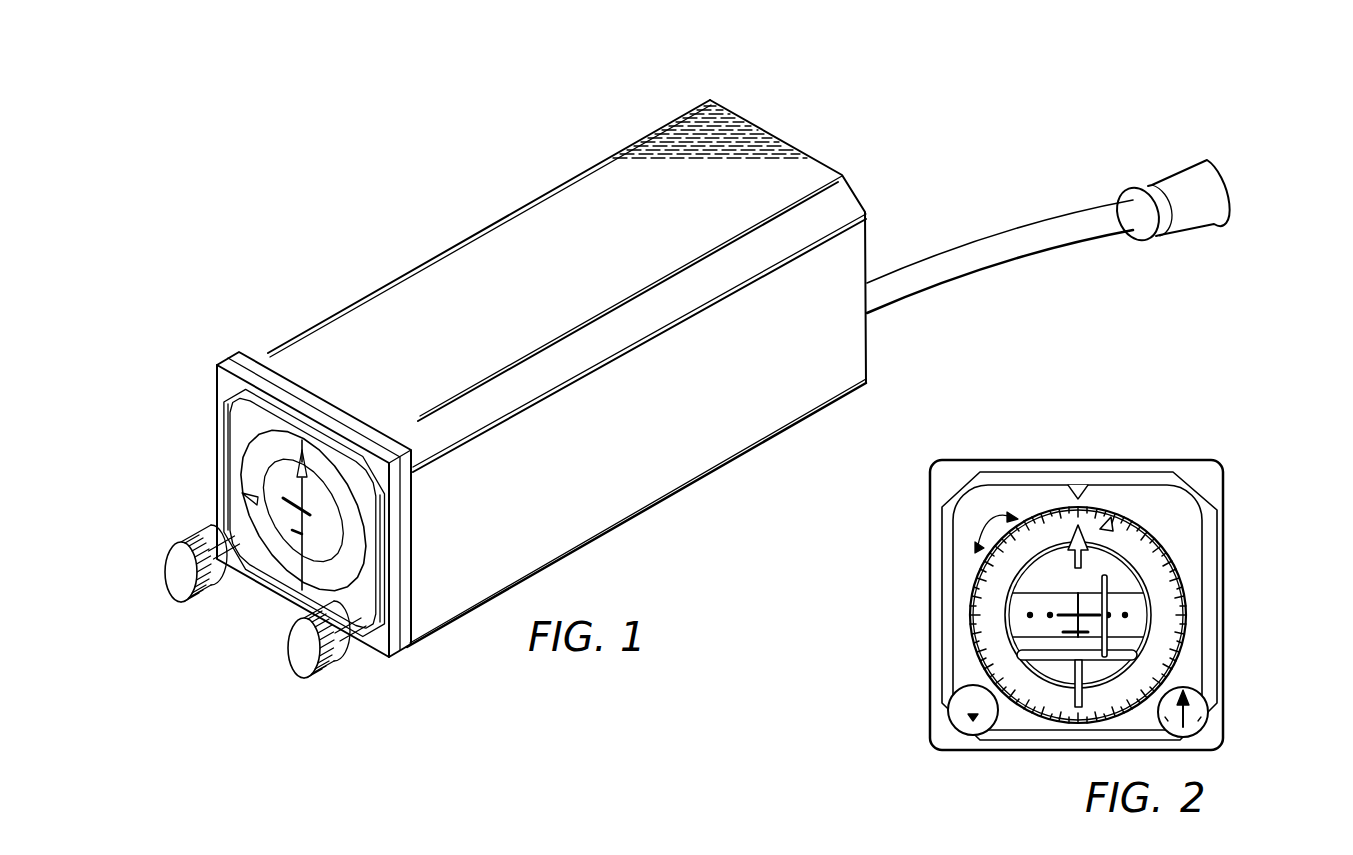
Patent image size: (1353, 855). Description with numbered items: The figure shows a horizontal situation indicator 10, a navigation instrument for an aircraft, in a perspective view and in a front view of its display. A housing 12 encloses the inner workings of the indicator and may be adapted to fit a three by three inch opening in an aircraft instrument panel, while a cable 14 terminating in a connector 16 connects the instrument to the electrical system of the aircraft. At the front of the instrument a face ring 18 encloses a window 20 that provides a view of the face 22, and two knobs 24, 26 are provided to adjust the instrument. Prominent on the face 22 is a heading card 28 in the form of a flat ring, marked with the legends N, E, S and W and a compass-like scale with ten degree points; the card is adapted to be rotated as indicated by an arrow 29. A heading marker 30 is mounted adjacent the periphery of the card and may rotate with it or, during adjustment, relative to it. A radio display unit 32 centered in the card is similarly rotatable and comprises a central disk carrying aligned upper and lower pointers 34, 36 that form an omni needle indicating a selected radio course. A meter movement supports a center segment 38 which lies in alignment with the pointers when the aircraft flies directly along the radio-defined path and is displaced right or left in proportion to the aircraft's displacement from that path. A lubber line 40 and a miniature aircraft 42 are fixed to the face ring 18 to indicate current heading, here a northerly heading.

In FIG. 1, the horizontal situation indicator 10 is at (438, 222).
In FIG. 1, the housing 12 is at (648, 508).
In FIG. 1, the cable 14 is at (990, 253).
In FIG. 1, the connector 16 is at (1167, 190).
In FIG. 1, the face ring 18 is at (393, 653).
In FIG. 2, the face ring 18 is at (1210, 460).
In FIG. 1, the window 20 is at (242, 426).
In FIG. 2, the window 20 is at (970, 528).
In FIG. 1, the face 22 is at (257, 477).
In FIG. 2, the face 22 is at (1175, 546).
In FIG. 1, the knob 24 is at (210, 597).
In FIG. 2, the knob 24 is at (957, 723).
In FIG. 1, the knob 26 is at (342, 654).
In FIG. 2, the knob 26 is at (1193, 737).
In FIG. 2, the heading card 28 is at (1048, 513).
In FIG. 2, the arrow 29 is at (996, 523).
In FIG. 2, the heading marker 30 is at (1120, 508).
In FIG. 2, the radio display unit 32 is at (1063, 581).
In FIG. 2, the upper pointer 34 is at (1087, 543).
In FIG. 2, the lower pointer 36 is at (1073, 677).
In FIG. 2, the center segment 38 is at (1108, 600).
In FIG. 2, the lubber line 40 is at (1076, 527).
In FIG. 2, the miniature aircraft 42 is at (1000, 602).